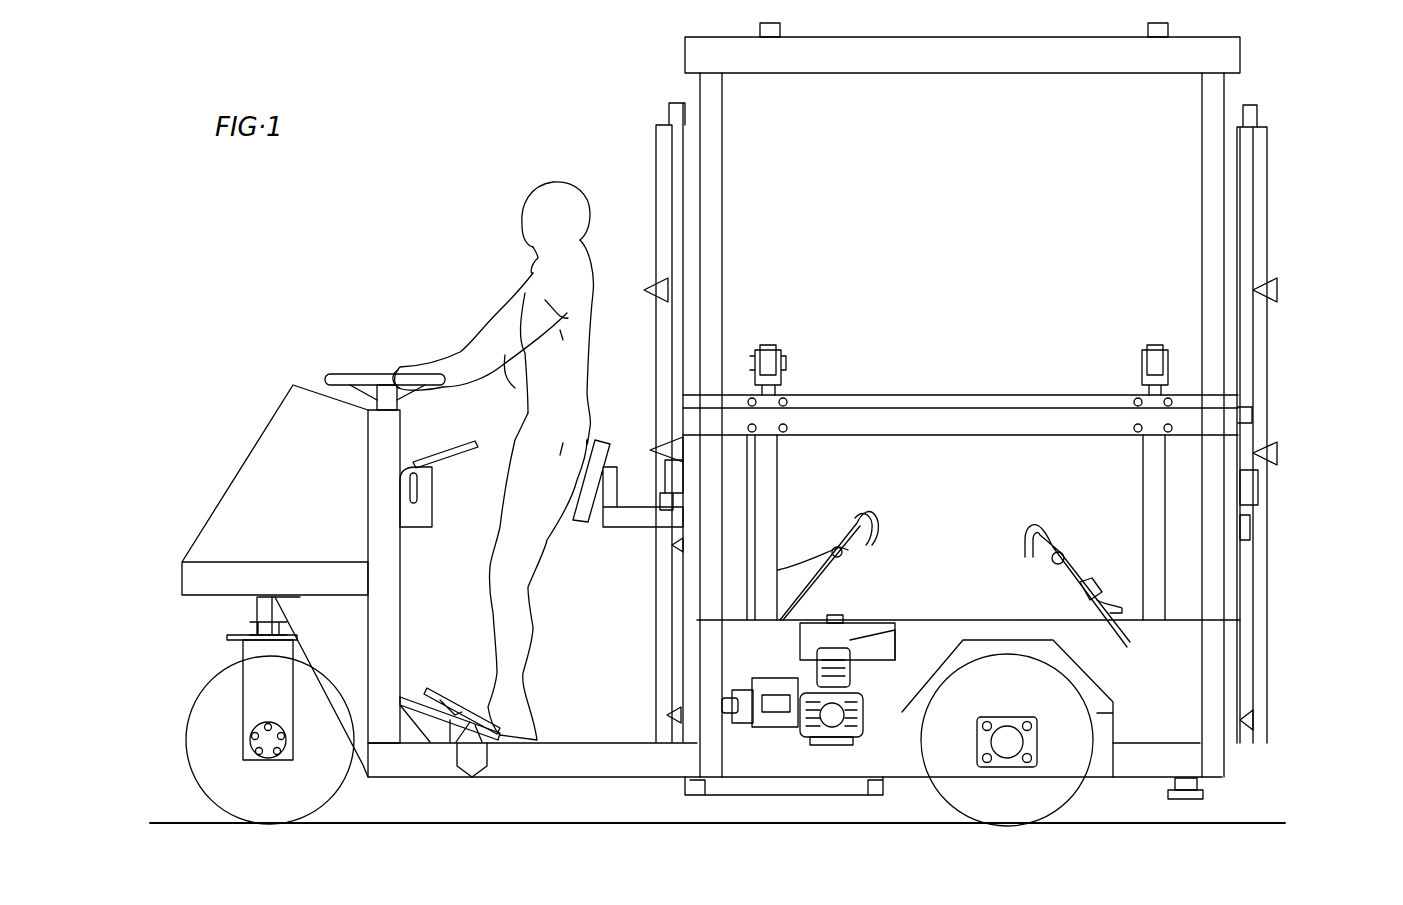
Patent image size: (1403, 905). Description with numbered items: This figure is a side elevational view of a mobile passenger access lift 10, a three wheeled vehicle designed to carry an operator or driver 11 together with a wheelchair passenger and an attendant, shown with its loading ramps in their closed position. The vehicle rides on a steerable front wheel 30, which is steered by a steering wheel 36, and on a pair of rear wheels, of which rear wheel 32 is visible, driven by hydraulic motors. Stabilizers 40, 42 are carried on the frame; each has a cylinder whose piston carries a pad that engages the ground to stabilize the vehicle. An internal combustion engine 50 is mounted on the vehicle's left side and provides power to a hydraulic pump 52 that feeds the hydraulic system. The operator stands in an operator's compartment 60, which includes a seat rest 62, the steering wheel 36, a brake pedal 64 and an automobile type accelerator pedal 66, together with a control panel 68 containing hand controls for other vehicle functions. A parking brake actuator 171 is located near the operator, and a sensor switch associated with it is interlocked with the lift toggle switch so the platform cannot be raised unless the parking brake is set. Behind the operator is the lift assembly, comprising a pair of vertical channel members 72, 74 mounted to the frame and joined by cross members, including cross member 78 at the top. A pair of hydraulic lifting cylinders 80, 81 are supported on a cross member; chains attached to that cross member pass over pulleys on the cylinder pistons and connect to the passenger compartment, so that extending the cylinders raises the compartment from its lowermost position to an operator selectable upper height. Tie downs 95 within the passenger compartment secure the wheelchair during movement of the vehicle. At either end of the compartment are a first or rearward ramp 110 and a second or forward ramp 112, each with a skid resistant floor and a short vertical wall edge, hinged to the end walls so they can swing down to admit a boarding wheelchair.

The mobile passenger access lift 10 is at (598, 122).
The operator or driver 11 is at (525, 202).
The steerable front wheel 30 is at (203, 700).
The rear wheel 32 is at (1065, 790).
The steering wheel 36 is at (335, 380).
The stabilizer 40 is at (345, 792).
The stabilizer 42 is at (1208, 795).
The internal combustion engine 50 is at (860, 745).
The hydraulic pump 52 is at (741, 718).
The operator's compartment 60 is at (440, 357).
The seat rest 62 is at (605, 440).
The brake pedal 64 is at (410, 698).
The accelerator pedal 66 is at (455, 700).
The control panel 68 is at (316, 397).
The vertical channel member 72 is at (723, 150).
The vertical channel member 74 is at (1202, 107).
The cross member 78 is at (920, 50).
The hydraulic lifting cylinder 80 is at (778, 490).
The hydraulic lifting cylinder 81 is at (1150, 493).
The tie downs 95 is at (1075, 595).
The rearward ramp 110 is at (1268, 152).
The forward ramp 112 is at (656, 180).
The parking brake actuator 171 is at (425, 505).